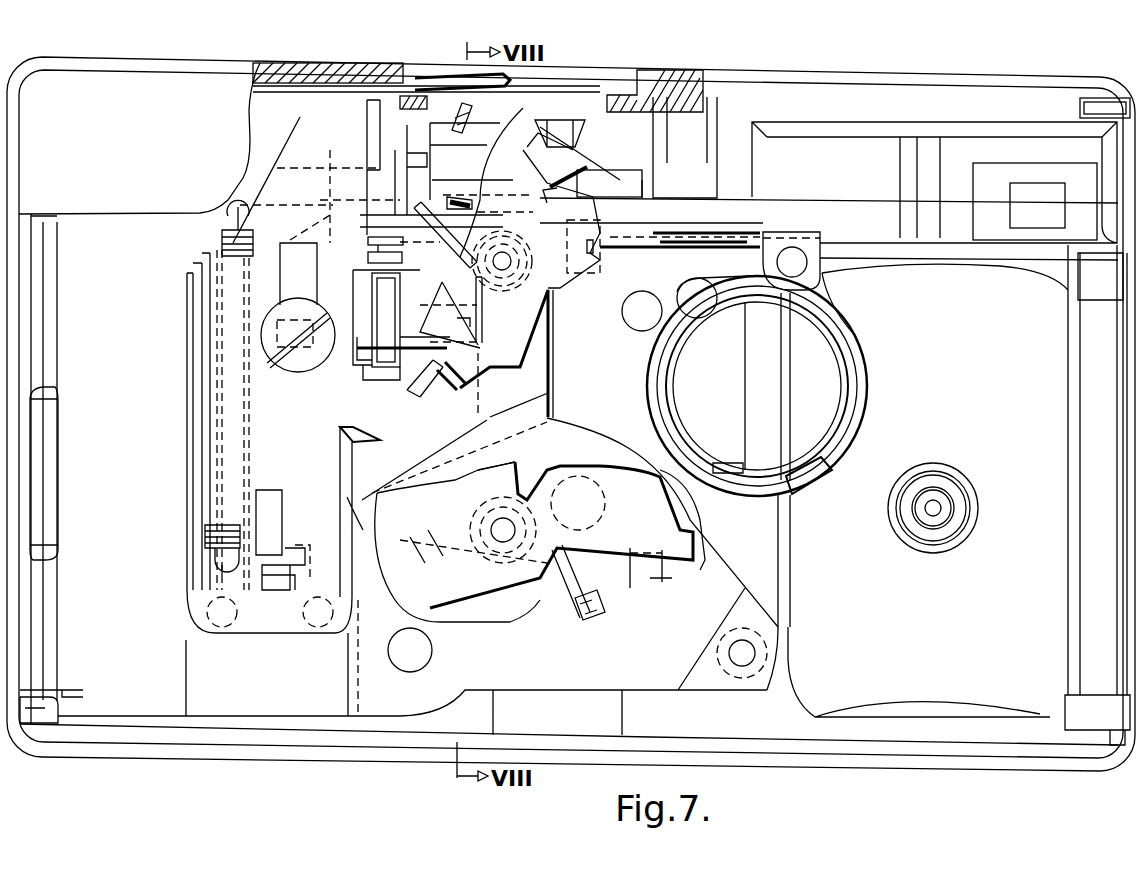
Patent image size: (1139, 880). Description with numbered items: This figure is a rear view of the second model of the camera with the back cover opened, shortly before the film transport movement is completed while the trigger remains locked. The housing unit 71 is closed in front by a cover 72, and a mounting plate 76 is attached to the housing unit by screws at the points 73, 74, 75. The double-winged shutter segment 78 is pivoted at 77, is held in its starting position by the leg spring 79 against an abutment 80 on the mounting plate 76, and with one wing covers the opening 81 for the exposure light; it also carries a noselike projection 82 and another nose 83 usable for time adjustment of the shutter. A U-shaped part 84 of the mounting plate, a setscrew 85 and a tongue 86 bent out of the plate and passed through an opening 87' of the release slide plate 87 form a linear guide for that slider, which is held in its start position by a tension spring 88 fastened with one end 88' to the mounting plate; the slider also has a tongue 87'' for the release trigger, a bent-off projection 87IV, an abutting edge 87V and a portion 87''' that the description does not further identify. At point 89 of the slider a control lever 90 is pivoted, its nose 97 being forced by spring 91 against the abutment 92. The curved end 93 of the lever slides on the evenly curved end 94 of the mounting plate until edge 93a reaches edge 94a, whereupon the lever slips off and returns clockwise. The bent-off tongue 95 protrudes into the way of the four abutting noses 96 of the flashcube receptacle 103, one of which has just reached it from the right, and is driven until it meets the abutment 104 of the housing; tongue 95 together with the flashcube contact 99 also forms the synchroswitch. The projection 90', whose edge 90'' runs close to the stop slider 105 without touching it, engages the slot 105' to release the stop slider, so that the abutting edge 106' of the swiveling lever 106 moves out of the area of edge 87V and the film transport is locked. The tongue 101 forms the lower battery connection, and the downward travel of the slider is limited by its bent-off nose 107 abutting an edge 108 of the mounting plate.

The housing unit 71 is at (935, 76).
The cover 72 is at (183, 114).
The attachment point 73 is at (742, 666).
The attachment point 74 is at (412, 663).
The attachment point 75 is at (640, 320).
The mounting plate 76 is at (596, 670).
The shutter segment pivot 77 is at (504, 545).
The shutter segment 78 is at (483, 572).
The leg spring 79 is at (578, 582).
The abutment 80 is at (663, 577).
The opening 81 is at (578, 480).
The noselike projection 82 is at (520, 472).
The nose 83 is at (693, 547).
The U-shaped part 84 is at (240, 680).
The setscrew 85 is at (290, 360).
The tongue 86 is at (283, 575).
The release slide plate 87 is at (249, 441).
The opening 87' is at (270, 633).
The tongue 87'' is at (173, 421).
The slide arm 87''' is at (345, 220).
The bent-off projection 87IV is at (375, 122).
The abutting edge 87V is at (380, 150).
The tension spring 88 is at (193, 546).
The spring end 88' is at (208, 228).
The pivot point 89 is at (553, 318).
The control lever 90 is at (524, 353).
The projection 90' is at (499, 385).
The edge 90'' is at (434, 308).
The spring 91 is at (480, 310).
The abutment 92 is at (420, 393).
The curved end 93 is at (574, 176).
The edge 93a is at (643, 177).
The curved end 94 is at (526, 182).
The edge 94a is at (574, 253).
The bent-off end 95 is at (545, 120).
The abutting noses 96 is at (570, 120).
The nose 97 is at (452, 382).
The flashcube contact 99 is at (320, 98).
The tongue 101 is at (782, 232).
The flashcube receptacle 103 is at (705, 85).
The abutment 104 is at (465, 108).
The stop slider 105 is at (378, 318).
The slot 105' is at (373, 390).
The swiveling lever 106 is at (386, 175).
The abutting edge 106' is at (328, 196).
The bent-off nose 107 is at (370, 422).
The edge 108 is at (358, 497).